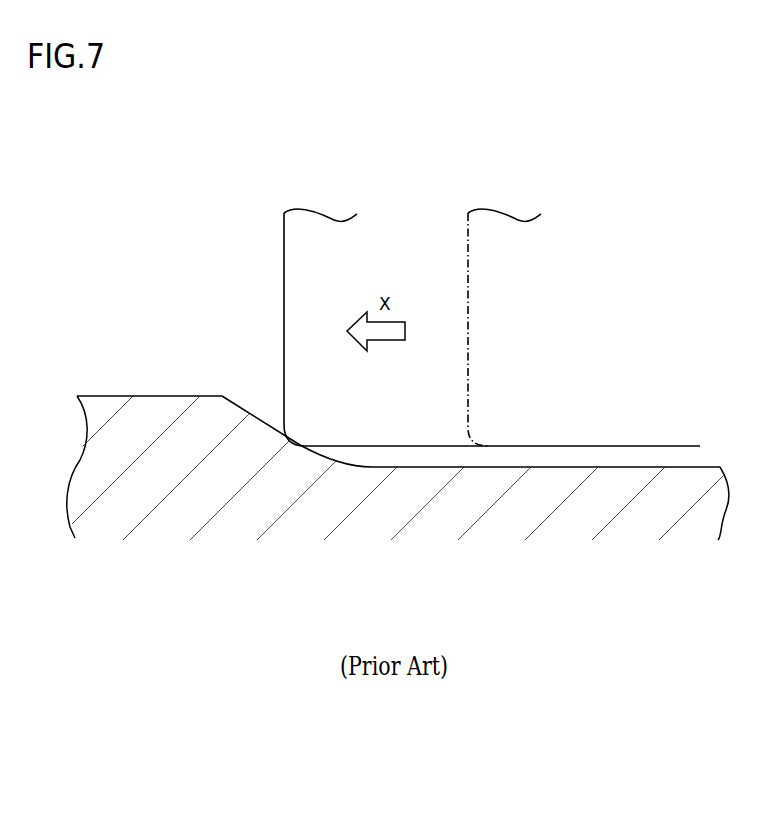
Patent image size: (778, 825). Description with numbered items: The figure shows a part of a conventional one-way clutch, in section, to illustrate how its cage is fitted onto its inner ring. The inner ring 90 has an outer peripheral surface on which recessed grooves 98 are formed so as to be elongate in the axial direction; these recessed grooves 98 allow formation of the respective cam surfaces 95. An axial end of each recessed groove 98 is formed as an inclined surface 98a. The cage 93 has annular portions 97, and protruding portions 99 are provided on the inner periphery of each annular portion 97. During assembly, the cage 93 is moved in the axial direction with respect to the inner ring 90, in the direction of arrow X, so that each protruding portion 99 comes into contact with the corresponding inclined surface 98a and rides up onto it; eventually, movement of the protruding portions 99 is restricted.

The inner ring 90 is at (478, 502).
The cage 93 is at (282, 287).
The cam surface 95 is at (635, 467).
The annular portion 97 is at (283, 240).
The recessed groove 98 is at (569, 460).
The inclined surface 98a is at (260, 420).
The protruding portion 99 is at (292, 443).